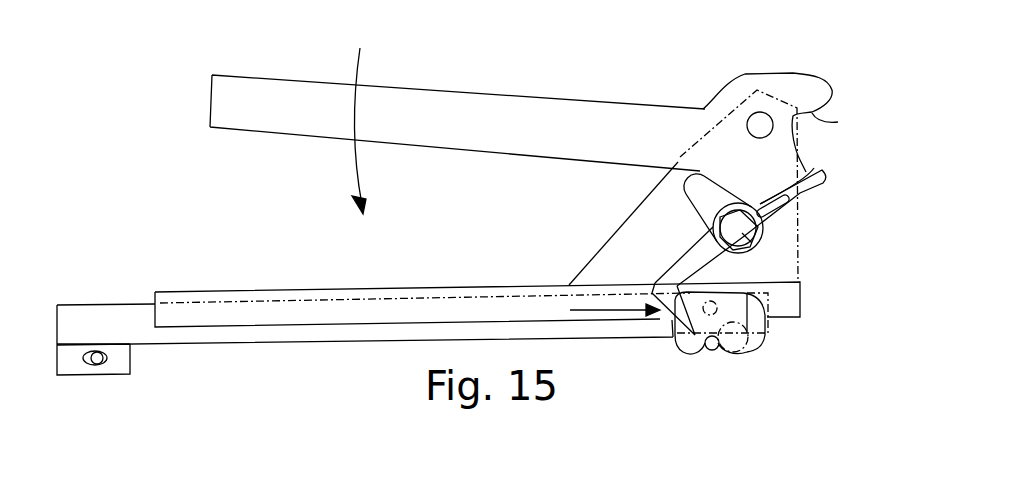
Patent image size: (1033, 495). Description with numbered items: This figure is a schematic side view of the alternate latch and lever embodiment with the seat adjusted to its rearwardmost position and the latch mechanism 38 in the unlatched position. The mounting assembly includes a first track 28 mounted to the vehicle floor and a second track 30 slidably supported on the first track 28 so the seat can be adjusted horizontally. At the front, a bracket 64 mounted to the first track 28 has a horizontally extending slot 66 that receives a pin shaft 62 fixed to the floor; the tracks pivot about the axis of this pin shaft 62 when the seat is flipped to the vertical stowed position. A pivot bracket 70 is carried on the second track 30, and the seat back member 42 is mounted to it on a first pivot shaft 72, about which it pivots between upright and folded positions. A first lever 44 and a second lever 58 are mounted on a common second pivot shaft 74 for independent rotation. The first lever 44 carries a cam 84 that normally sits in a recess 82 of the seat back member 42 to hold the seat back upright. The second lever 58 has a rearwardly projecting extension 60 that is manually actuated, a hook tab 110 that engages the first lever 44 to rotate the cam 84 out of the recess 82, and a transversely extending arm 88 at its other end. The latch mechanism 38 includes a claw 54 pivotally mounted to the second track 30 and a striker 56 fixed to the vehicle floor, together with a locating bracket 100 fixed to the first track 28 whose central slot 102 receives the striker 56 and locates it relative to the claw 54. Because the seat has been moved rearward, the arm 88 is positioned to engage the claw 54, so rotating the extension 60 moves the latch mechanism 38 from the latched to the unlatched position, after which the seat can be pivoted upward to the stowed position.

The first track 28 is at (320, 334).
The second track 30 is at (208, 291).
The latch mechanism 38 is at (725, 396).
The seat back member 42 is at (500, 97).
The first lever 44 is at (697, 197).
The claw 54 is at (763, 343).
The striker 56 is at (712, 351).
The second lever 58 is at (690, 258).
The extension 60 is at (823, 173).
The pin shaft 62 is at (92, 366).
The bracket 64 is at (122, 365).
The slot 66 is at (104, 366).
The pivot bracket 70 is at (597, 253).
The first pivot shaft 72 is at (762, 122).
The second pivot shaft 74 is at (757, 248).
The recess 82 is at (838, 122).
The cam 84 is at (698, 170).
The arm 88 is at (680, 322).
The locating bracket 100 is at (675, 338).
The slot 102 is at (722, 360).
The hook tab 110 is at (745, 196).